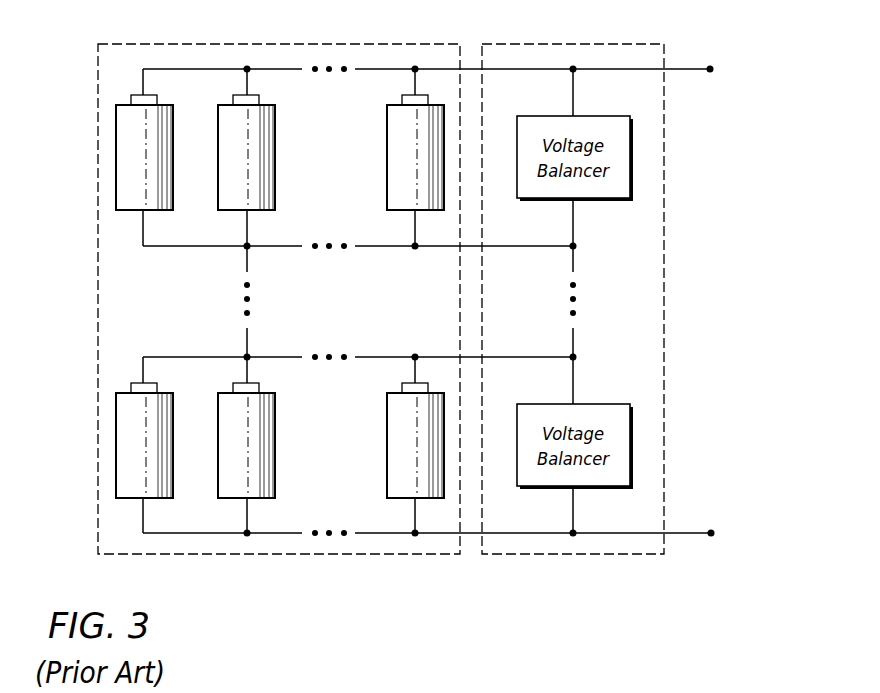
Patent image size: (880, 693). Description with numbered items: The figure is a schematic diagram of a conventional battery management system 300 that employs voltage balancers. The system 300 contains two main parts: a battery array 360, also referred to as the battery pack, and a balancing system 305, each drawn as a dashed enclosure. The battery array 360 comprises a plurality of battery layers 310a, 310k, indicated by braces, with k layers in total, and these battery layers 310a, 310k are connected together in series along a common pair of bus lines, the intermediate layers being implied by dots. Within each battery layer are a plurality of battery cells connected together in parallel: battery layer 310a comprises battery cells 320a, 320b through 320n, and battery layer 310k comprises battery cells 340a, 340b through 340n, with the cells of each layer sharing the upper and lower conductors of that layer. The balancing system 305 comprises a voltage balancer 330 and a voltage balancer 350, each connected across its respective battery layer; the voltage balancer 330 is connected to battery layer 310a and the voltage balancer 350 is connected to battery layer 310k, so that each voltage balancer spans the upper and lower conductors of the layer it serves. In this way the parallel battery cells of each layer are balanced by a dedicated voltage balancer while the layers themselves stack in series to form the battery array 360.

The battery management system 300 is at (464, 605).
The balancing system 305 is at (582, 590).
The battery layer 310a is at (92, 85).
The battery layer 310k is at (92, 373).
The battery cell 320a is at (130, 211).
The battery cell 320b is at (275, 147).
The battery cell 320n is at (387, 158).
The voltage balancer 330 is at (630, 158).
The battery cell 340a is at (127, 499).
The battery cell 340b is at (275, 437).
The battery cell 340n is at (387, 446).
The voltage balancer 350 is at (631, 445).
The battery array 360 is at (285, 592).